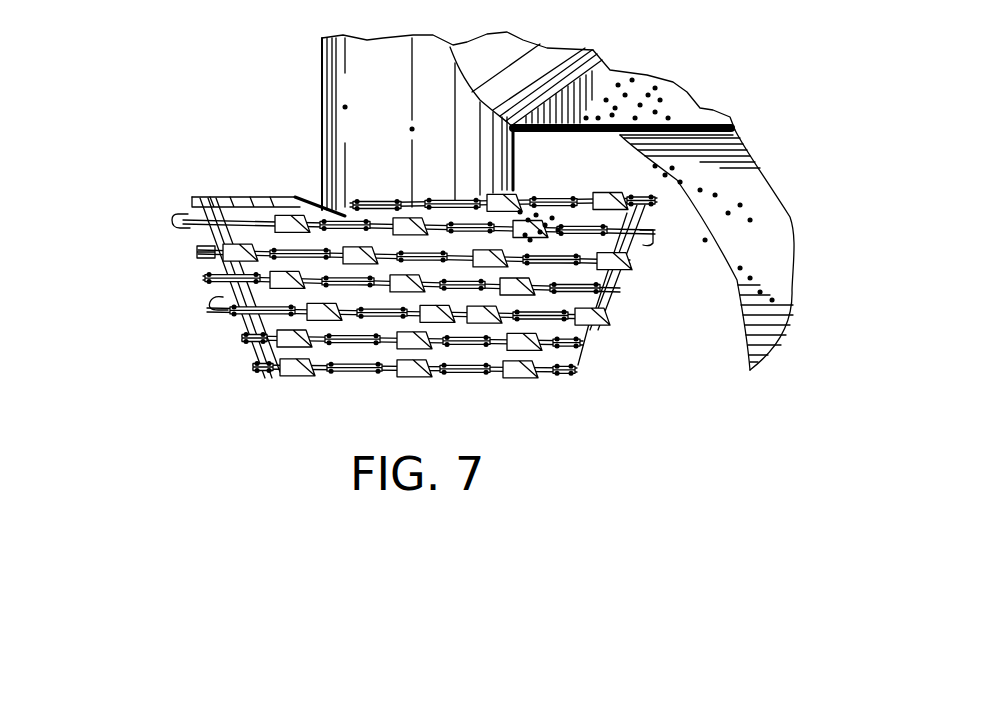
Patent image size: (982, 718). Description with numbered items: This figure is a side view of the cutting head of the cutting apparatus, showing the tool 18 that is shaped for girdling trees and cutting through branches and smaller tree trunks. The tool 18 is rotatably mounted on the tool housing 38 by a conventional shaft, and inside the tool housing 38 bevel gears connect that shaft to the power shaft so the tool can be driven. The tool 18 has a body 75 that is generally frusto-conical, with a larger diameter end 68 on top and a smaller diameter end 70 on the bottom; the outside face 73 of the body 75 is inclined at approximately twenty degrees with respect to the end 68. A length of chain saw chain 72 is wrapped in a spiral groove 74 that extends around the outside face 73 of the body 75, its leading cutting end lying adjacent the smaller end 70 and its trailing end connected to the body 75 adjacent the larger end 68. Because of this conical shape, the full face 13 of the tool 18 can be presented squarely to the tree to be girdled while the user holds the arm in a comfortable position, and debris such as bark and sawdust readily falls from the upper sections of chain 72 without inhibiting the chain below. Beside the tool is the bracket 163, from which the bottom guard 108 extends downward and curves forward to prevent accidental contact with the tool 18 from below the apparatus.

The face 13 is at (180, 284).
The tool 18 is at (198, 186).
The tool housing 38 is at (360, 90).
The larger diameter end 68 is at (272, 196).
The smaller diameter end 70 is at (320, 375).
The chain saw chain 72 is at (243, 308).
The face 73 is at (197, 235).
The spiral groove 74 is at (263, 345).
The body 75 is at (568, 306).
The bottom guard 108 is at (765, 237).
The bracket 163 is at (660, 90).